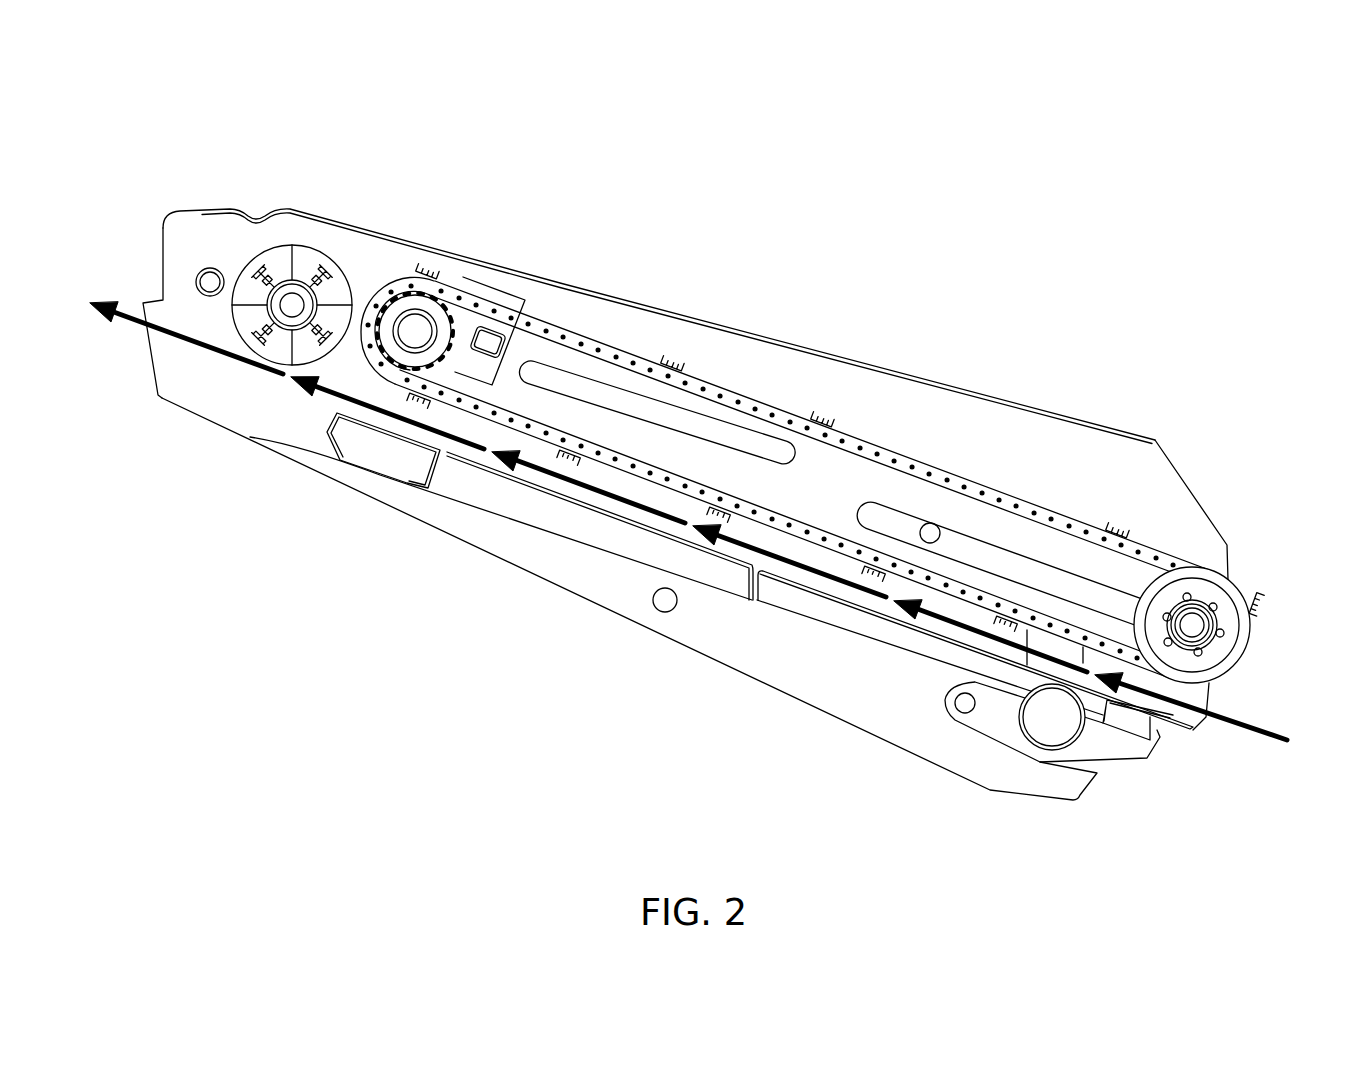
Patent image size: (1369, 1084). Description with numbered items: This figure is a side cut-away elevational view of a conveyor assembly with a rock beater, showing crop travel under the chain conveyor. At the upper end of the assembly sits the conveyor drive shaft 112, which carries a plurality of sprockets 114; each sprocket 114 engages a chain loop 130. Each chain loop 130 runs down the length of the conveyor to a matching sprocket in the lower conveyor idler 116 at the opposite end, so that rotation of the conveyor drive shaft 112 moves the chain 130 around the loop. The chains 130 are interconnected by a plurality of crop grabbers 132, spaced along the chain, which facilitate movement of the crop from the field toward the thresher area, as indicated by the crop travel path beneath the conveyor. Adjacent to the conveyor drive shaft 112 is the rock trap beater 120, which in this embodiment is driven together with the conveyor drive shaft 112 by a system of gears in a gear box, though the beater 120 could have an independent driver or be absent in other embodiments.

The conveyor drive shaft 112 is at (413, 327).
The sprocket 114 is at (393, 355).
The lower conveyor idler 116 is at (1210, 597).
The rock trap beater 120 is at (273, 262).
The chain loop 130 is at (565, 335).
The crop grabber 132 is at (680, 370).